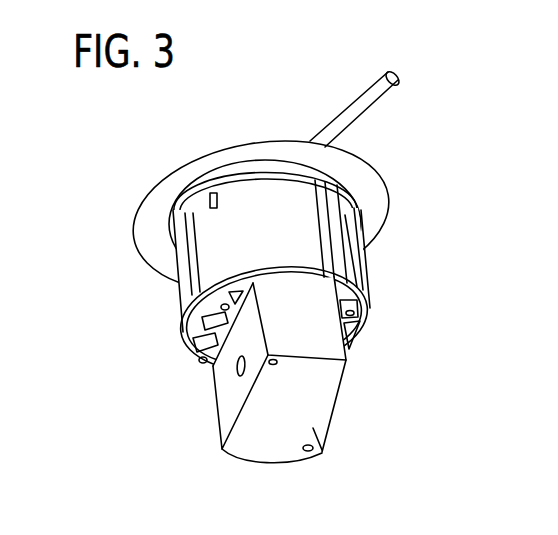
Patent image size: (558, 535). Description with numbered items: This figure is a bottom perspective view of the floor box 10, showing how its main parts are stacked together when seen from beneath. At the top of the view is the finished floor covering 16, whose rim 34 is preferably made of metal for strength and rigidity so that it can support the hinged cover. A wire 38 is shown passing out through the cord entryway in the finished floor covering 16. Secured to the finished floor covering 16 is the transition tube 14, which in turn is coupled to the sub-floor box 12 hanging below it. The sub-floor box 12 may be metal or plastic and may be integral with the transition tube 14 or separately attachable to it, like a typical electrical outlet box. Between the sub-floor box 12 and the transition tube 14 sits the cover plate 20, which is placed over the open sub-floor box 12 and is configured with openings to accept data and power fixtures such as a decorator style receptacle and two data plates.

The floor box 10 is at (438, 273).
The sub-floor box 12 is at (297, 398).
The transition tube 14 is at (280, 238).
The finished floor covering 16 is at (235, 130).
The cover plate 20 is at (232, 280).
The rim 34 is at (148, 199).
The wire 38 is at (375, 92).